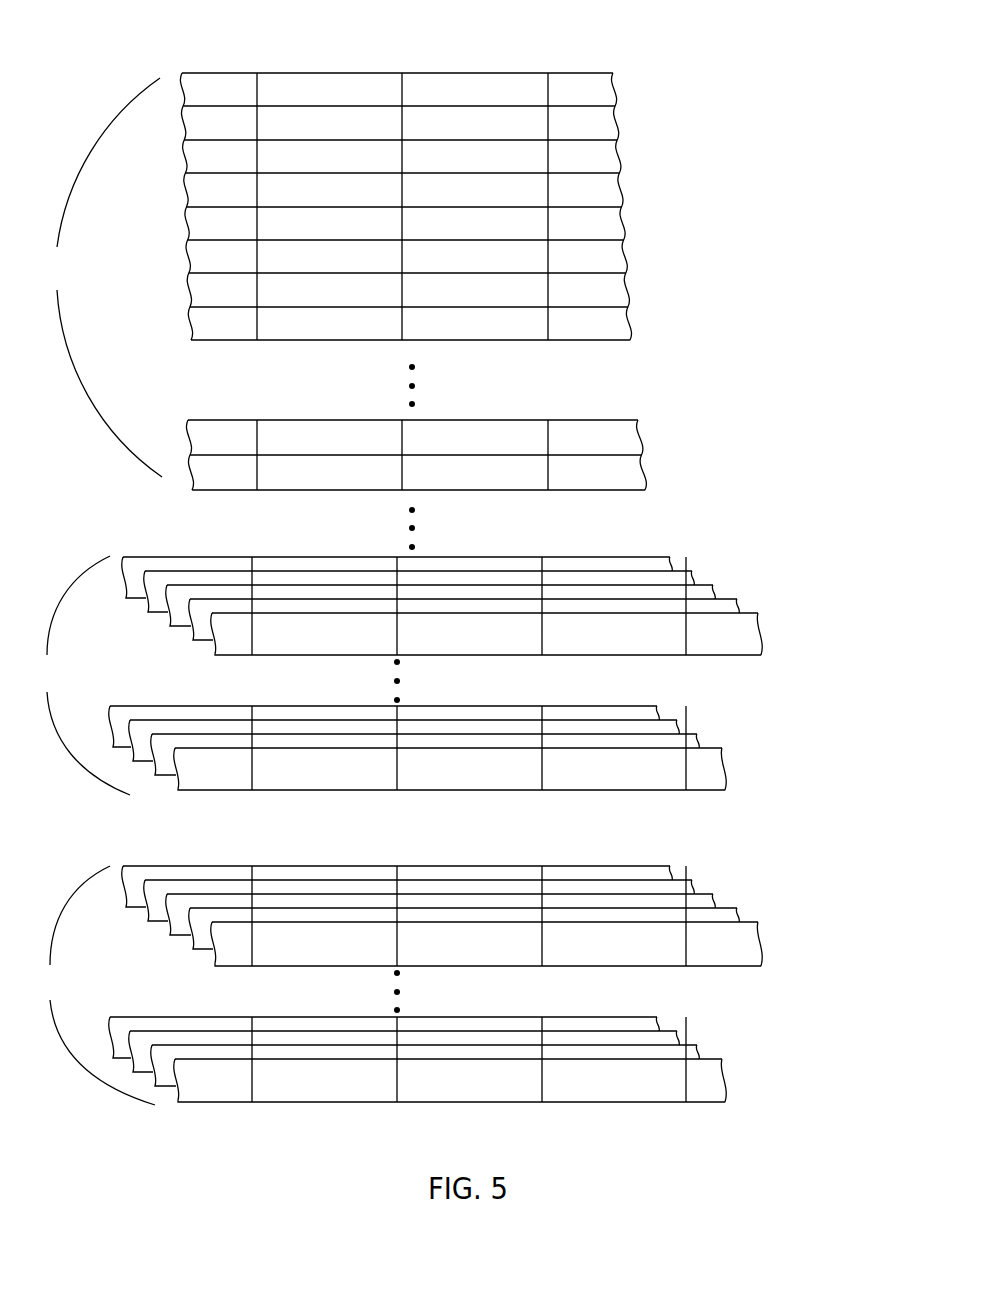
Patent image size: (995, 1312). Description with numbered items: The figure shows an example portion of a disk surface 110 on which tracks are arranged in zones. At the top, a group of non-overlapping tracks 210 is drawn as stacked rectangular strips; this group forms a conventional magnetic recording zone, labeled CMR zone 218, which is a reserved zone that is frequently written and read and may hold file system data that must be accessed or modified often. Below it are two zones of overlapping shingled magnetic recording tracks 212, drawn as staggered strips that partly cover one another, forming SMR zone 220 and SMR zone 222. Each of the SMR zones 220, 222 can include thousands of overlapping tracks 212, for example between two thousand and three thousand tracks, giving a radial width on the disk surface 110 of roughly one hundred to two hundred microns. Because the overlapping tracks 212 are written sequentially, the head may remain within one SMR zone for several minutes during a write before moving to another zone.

The disk surface 110 is at (321, 54).
The non-overlapping tracks 210 is at (617, 88).
The overlapping SMR tracks 212 is at (737, 602).
The CMR zone 218 is at (101, 277).
The SMR zone 220 is at (80, 675).
The SMR zone 222 is at (95, 985).